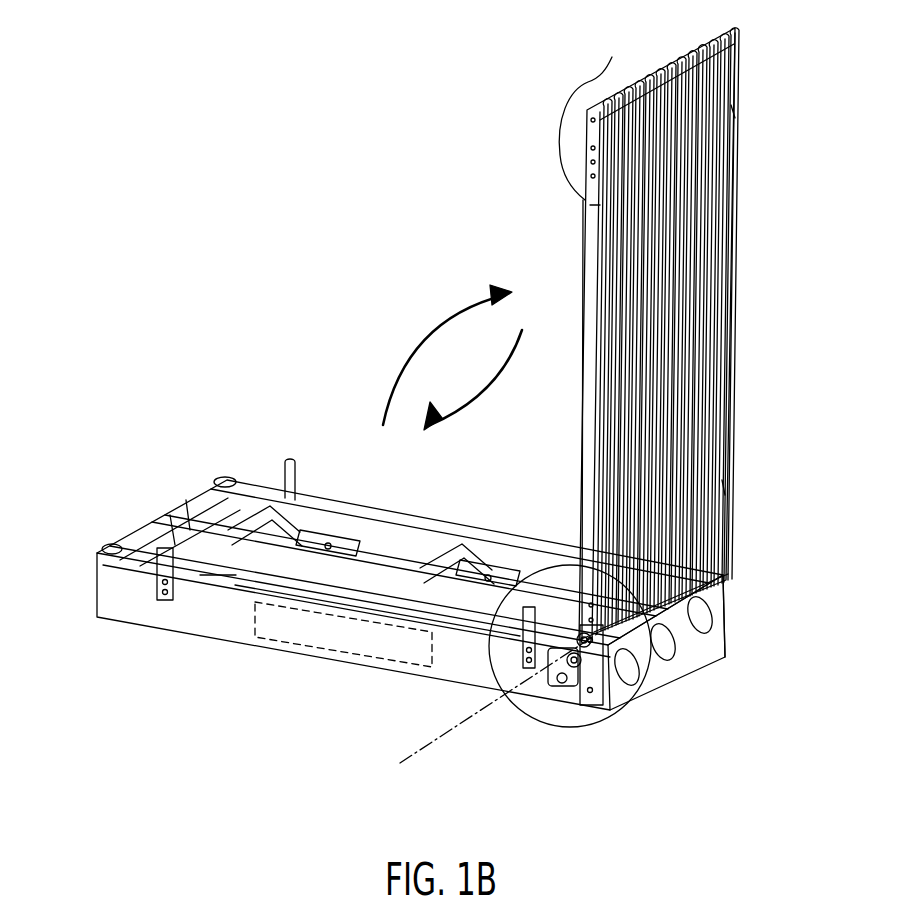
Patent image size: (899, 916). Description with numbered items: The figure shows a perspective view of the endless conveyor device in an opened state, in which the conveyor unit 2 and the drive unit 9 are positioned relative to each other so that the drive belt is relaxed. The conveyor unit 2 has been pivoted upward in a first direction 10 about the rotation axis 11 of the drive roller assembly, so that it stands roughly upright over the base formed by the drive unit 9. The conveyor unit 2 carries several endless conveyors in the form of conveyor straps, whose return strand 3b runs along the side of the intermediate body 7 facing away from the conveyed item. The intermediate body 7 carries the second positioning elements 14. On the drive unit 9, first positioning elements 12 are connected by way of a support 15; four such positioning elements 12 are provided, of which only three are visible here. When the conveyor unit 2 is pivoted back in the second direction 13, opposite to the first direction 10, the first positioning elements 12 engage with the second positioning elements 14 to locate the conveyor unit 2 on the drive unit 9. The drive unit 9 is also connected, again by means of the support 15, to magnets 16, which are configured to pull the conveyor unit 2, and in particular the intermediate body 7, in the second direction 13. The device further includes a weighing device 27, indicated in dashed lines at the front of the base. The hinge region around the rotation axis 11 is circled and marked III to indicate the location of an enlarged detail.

The conveyor unit 2 is at (765, 293).
The return strand 3b is at (595, 109).
The intermediate body 7 is at (585, 268).
The drive unit 9 is at (585, 705).
The first direction 10 is at (425, 345).
The rotation axis 11 is at (452, 735).
The positioning element 12 is at (283, 475).
The second direction 13 is at (470, 360).
The second positioning element 14 is at (733, 112).
The support 15 is at (193, 627).
The magnet 16 is at (232, 480).
The weighing device 27 is at (280, 650).
The section view indicator III is at (549, 726).